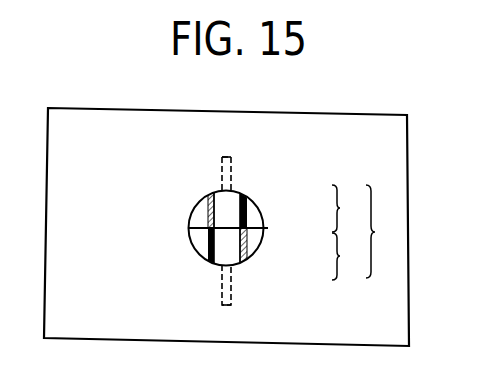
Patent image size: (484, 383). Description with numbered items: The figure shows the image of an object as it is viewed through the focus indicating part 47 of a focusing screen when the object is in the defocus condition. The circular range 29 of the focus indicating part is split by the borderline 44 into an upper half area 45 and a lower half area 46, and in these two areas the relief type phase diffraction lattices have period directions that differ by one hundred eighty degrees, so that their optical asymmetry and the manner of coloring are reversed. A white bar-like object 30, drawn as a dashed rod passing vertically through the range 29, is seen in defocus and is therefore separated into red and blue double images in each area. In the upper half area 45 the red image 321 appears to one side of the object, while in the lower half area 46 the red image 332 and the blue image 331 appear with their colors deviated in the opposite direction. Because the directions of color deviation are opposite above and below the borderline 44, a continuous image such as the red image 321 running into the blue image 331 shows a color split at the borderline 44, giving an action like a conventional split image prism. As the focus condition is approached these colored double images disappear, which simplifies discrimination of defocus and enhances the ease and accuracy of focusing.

The range of the focus indicating part 29 is at (262, 207).
The white bar-like object 30 is at (232, 159).
The borderline 44 is at (268, 228).
The upper half area 45 is at (352, 208).
The lower half area 46 is at (352, 256).
The focus indicating part 47 is at (388, 231).
The red image 321 is at (243, 192).
The blue image 331 is at (244, 250).
The red image 332 is at (210, 250).